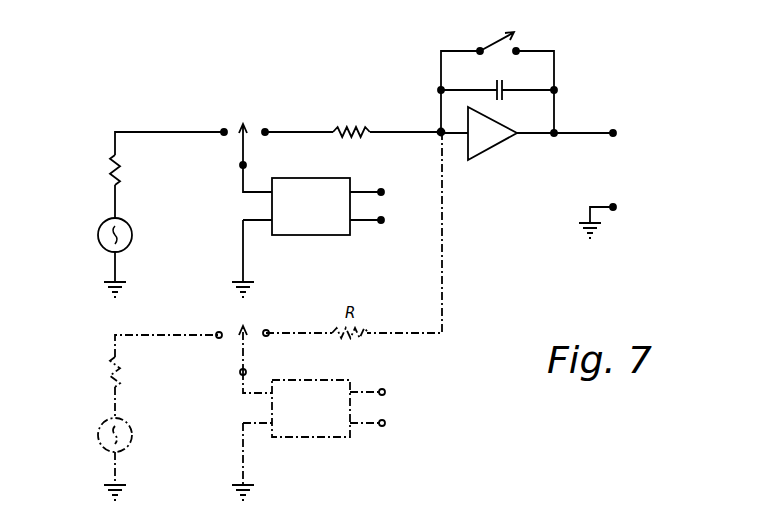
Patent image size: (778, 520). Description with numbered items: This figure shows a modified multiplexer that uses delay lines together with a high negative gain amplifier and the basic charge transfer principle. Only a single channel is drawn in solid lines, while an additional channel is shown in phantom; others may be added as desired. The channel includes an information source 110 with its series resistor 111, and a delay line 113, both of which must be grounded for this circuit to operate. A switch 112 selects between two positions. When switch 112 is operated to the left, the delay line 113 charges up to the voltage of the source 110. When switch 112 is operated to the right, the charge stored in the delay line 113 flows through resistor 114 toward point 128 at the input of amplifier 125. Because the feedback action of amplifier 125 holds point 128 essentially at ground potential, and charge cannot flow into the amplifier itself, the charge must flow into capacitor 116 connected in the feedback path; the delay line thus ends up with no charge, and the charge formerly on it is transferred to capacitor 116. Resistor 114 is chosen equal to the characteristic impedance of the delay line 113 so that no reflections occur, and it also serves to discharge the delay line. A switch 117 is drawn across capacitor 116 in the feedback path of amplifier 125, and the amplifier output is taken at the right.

The signal source 110 is at (133, 235).
The source resistor 111 is at (110, 170).
The switch 112 is at (241, 153).
The delay line 113 is at (315, 178).
The resistor 114 is at (352, 139).
The capacitor 116 is at (503, 90).
The switch 117 is at (485, 45).
The amplifier 125 is at (497, 118).
The point 128 is at (440, 131).